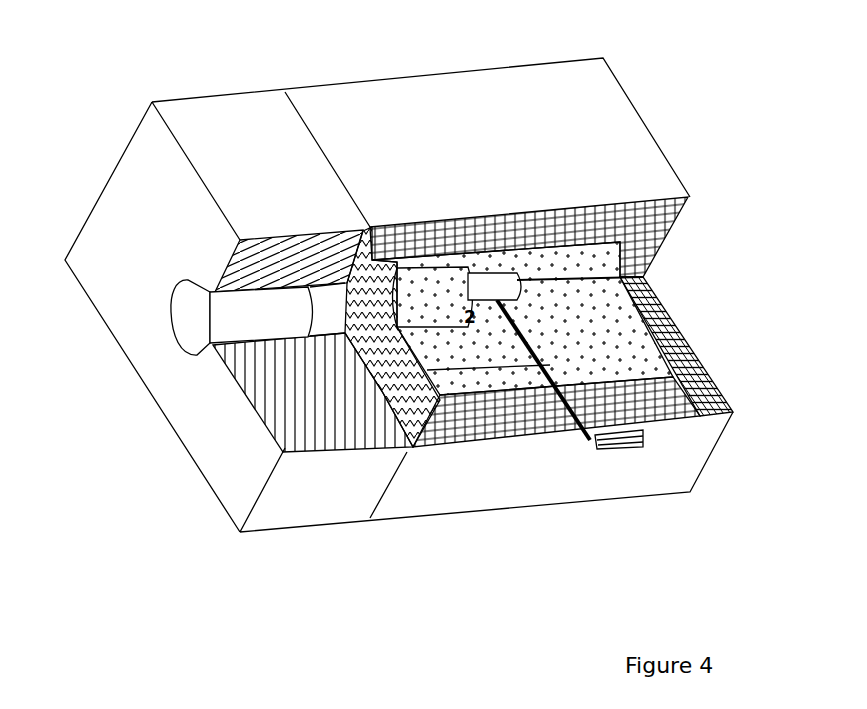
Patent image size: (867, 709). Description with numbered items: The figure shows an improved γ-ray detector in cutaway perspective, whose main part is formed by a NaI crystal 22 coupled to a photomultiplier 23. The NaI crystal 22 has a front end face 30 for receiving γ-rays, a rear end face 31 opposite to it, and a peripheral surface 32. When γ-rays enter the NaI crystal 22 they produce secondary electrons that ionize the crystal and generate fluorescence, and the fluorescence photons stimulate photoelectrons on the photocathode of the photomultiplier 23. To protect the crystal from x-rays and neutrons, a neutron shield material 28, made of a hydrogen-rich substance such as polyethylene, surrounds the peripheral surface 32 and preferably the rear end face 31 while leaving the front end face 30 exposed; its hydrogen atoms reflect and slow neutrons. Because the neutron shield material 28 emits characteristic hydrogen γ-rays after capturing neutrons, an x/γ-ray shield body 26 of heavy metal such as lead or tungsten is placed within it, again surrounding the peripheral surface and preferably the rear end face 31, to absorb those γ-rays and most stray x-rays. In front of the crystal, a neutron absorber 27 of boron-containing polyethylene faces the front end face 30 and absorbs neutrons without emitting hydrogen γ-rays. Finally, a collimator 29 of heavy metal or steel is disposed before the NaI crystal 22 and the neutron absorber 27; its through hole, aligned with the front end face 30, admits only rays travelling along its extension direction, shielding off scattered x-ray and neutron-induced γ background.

The NaI crystal 22 is at (440, 287).
The photomultiplier 23 is at (487, 285).
The x/γ-ray shield body 26 is at (637, 313).
The neutron absorber 27 is at (700, 353).
The neutron shield material 28 is at (718, 390).
The collimator 29 is at (415, 450).
The front end face 30 is at (342, 335).
The rear end face 31 is at (393, 390).
The peripheral surface 32 is at (440, 287).